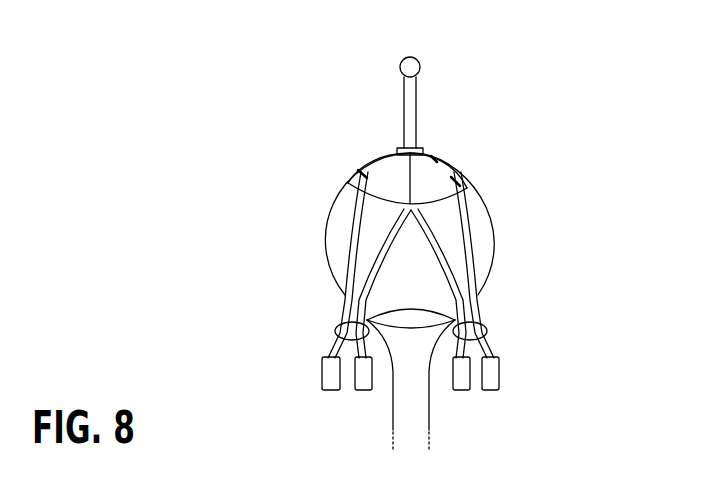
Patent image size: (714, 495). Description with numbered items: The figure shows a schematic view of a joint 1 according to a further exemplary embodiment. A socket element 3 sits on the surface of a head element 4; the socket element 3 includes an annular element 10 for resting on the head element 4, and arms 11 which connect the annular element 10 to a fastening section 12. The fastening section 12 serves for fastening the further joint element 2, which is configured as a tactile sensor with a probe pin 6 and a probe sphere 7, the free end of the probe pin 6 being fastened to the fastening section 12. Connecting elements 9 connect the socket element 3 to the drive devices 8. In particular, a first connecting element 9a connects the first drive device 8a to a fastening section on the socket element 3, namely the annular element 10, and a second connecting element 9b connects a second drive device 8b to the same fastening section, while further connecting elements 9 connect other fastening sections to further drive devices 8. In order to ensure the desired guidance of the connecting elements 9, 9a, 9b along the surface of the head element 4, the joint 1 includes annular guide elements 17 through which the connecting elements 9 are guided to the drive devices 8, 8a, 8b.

The joint 1 is at (226, 316).
The further joint element 2 is at (418, 103).
The socket element 3 is at (463, 173).
The head element 4 is at (418, 213).
The probe pin 6 is at (403, 100).
The probe sphere 7 is at (419, 62).
The drive devices 8 is at (411, 404).
The first drive device 8a is at (365, 380).
The second drive device 8b is at (462, 380).
The connecting elements 9 is at (353, 232).
The first connecting element 9a is at (374, 267).
The second connecting element 9b is at (452, 258).
The annular element 10 is at (363, 173).
The arms 11 is at (383, 165).
The fastening section 12 is at (413, 178).
The annular guide elements 17 is at (335, 328).